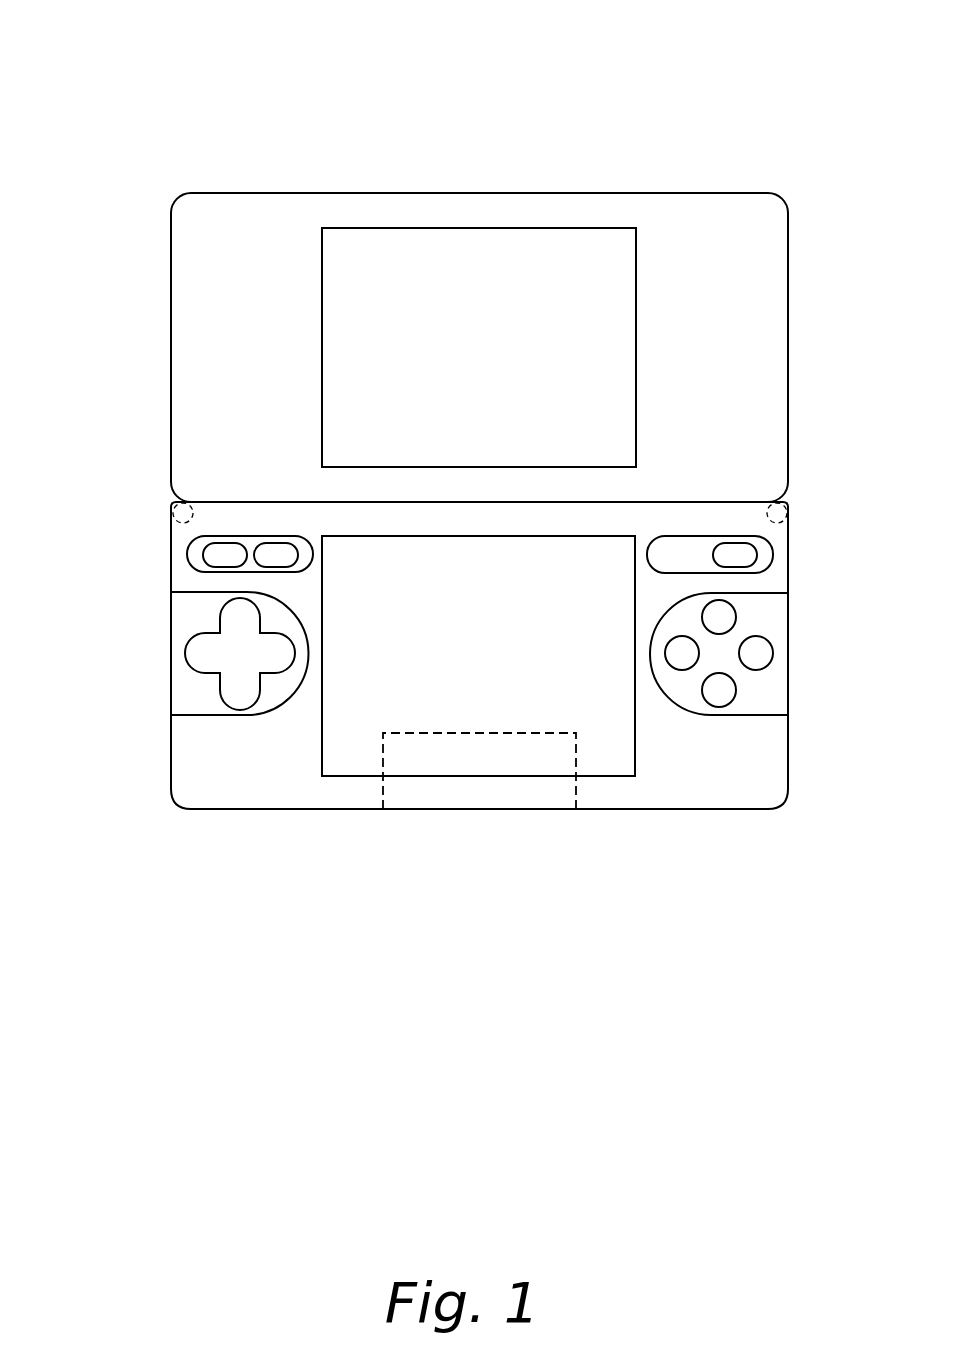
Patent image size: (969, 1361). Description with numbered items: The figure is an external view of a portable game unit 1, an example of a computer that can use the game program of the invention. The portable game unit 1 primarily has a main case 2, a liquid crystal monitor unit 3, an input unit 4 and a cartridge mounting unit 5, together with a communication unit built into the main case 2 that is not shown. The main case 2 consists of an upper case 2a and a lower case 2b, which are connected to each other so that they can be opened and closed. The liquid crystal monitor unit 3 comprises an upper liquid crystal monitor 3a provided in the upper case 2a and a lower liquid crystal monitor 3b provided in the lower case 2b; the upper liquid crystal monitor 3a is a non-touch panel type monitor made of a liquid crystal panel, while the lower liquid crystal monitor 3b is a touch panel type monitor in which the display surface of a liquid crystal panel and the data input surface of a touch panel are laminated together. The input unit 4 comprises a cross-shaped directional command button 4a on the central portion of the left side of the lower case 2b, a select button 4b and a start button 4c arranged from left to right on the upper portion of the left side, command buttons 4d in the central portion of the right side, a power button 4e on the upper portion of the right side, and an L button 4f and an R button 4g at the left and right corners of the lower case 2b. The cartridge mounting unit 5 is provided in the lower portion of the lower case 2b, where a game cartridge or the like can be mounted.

The portable game unit 1 is at (470, 479).
The main case 2 is at (533, 501).
The upper case 2a is at (762, 372).
The lower case 2b is at (762, 755).
The liquid crystal monitor unit 3 is at (479, 511).
The upper liquid crystal monitor 3a is at (582, 252).
The lower liquid crystal monitor 3b is at (612, 752).
The input unit 4 is at (470, 677).
The cross-shaped directional command button 4a is at (206, 664).
The select button 4b is at (217, 558).
The start button 4c is at (275, 561).
The command buttons 4d is at (770, 620).
The power button 4e is at (740, 555).
The L button 4f is at (172, 507).
The R button 4g is at (786, 508).
The cartridge mounting unit 5 is at (573, 787).